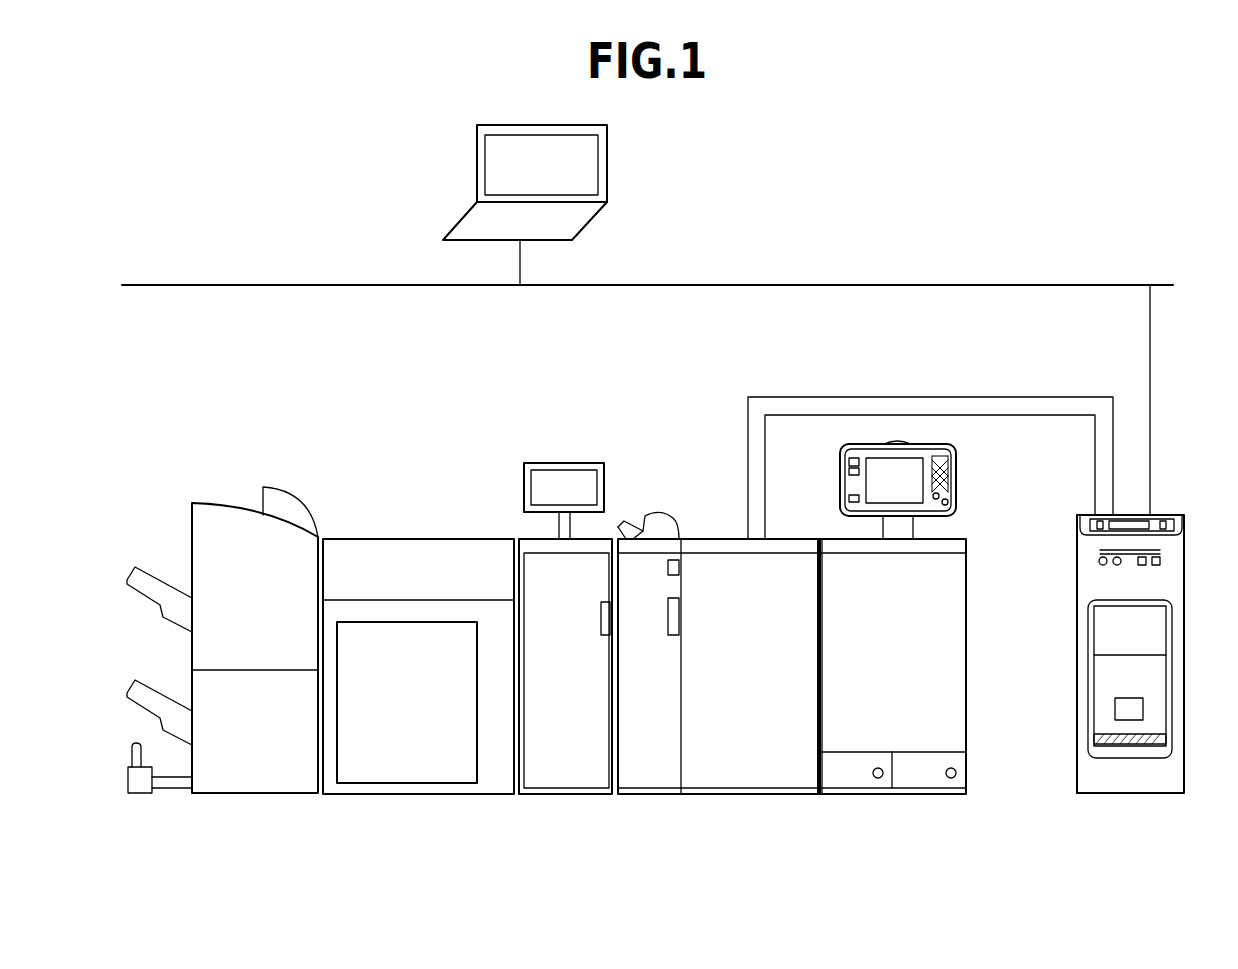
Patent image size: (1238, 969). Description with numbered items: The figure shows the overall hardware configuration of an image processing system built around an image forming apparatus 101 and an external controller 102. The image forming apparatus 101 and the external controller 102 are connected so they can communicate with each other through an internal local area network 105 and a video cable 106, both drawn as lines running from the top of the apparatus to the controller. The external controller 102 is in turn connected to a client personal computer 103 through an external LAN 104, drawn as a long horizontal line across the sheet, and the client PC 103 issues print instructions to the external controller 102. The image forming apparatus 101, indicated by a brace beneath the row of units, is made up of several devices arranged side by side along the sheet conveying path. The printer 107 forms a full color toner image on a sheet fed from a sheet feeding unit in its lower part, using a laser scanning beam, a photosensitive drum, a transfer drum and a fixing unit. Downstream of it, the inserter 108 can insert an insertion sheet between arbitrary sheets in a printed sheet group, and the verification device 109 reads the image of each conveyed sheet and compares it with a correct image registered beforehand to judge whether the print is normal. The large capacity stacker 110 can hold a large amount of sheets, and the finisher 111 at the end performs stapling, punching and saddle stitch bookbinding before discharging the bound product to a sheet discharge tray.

The image forming apparatus 101 is at (550, 687).
The external controller 102 is at (1127, 795).
The client personal computer 103 is at (477, 160).
The external LAN 104 is at (994, 285).
The internal LAN 105 is at (1017, 416).
The video cable 106 is at (994, 397).
The printer 107 is at (892, 696).
The inserter 108 is at (648, 795).
The verification device 109 is at (560, 795).
The large capacity stacker 110 is at (405, 795).
The finisher 111 is at (247, 795).